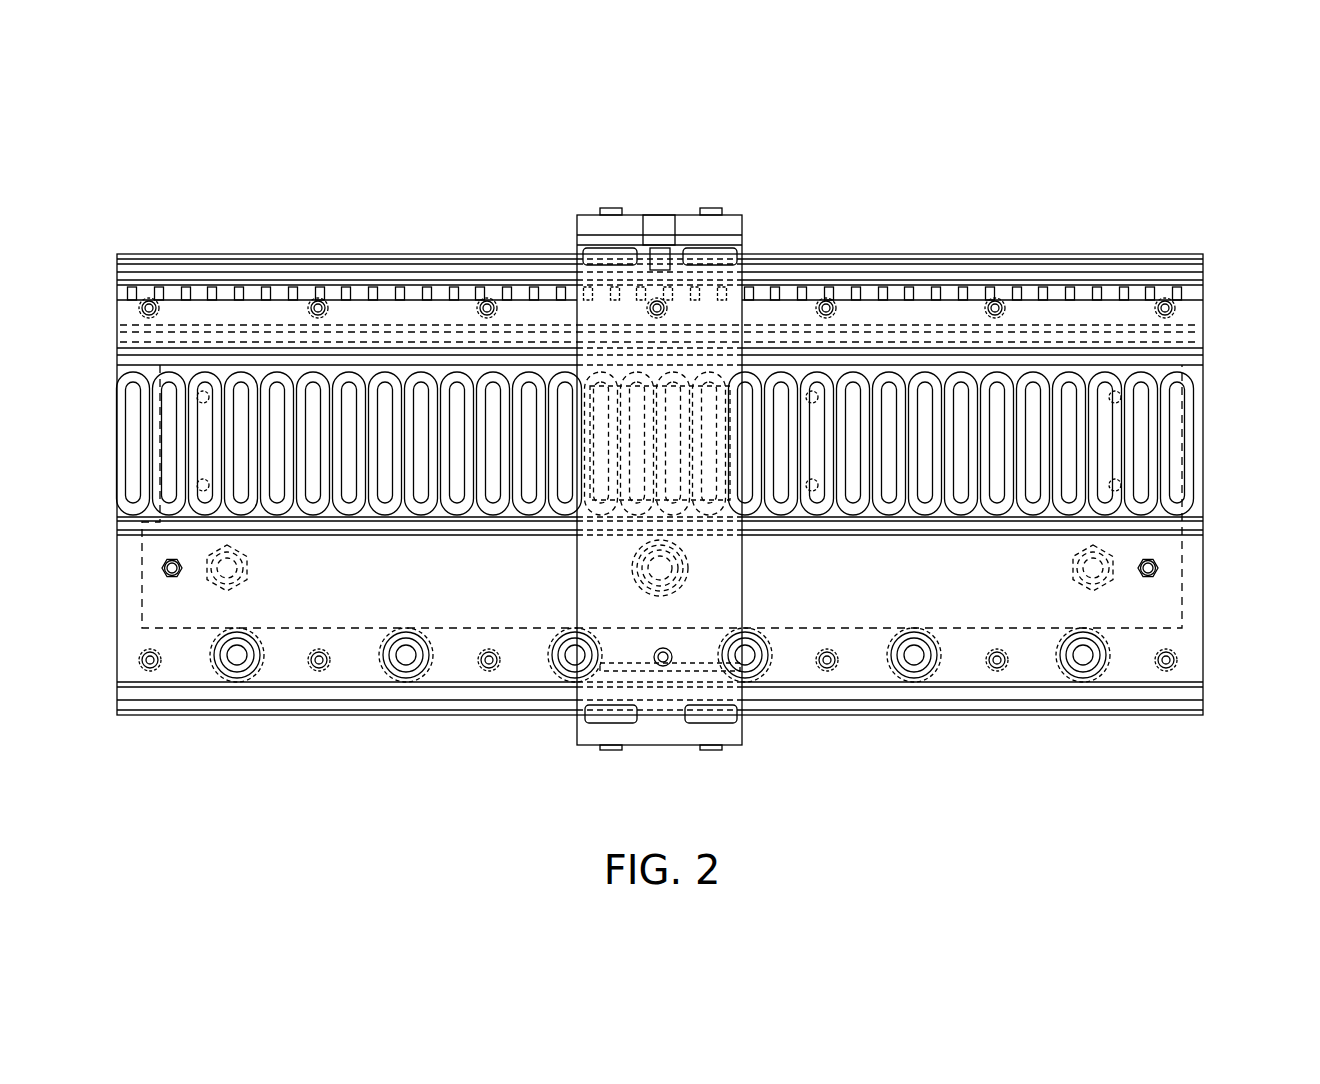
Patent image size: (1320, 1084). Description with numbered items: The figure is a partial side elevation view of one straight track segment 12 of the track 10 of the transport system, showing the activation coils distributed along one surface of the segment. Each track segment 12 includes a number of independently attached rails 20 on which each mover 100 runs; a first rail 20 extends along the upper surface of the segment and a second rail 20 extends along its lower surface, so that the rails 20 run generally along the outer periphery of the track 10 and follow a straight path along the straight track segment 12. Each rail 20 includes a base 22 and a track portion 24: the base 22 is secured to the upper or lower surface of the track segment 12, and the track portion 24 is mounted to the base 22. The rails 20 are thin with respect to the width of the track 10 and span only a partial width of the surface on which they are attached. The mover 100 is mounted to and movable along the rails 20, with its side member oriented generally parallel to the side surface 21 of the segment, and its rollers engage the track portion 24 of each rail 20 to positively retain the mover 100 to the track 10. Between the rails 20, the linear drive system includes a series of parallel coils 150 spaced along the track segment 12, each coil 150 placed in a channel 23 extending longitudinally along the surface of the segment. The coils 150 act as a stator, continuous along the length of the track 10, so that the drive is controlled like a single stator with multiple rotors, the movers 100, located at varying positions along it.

The track 10 is at (1124, 172).
The track segment 12 is at (697, 490).
The rail 20 is at (959, 245).
The side surface 21 is at (1193, 575).
The base 22 is at (862, 272).
The channel 23 is at (1195, 378).
The track portion 24 is at (912, 258).
The mover 100 is at (742, 215).
The coil 150 is at (1152, 493).